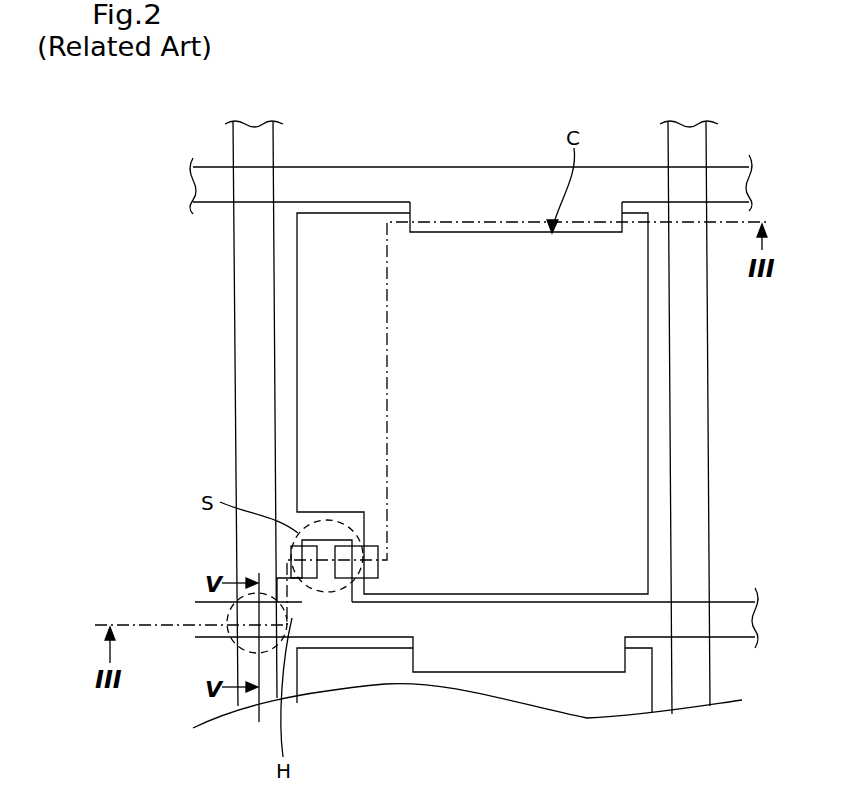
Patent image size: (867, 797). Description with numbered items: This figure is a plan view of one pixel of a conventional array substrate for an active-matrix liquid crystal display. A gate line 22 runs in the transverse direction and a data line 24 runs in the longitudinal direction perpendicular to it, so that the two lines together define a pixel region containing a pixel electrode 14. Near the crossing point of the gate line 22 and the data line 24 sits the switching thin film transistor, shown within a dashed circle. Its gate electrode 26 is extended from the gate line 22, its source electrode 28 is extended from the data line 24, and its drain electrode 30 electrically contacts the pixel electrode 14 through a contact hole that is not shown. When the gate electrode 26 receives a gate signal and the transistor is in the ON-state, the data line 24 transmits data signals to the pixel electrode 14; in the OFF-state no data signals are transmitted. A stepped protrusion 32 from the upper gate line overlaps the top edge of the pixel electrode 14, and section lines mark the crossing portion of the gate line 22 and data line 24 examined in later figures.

The pixel electrode 14 is at (650, 441).
The gate line 22 is at (470, 657).
The data line 24 is at (257, 377).
The gate electrode 26 is at (327, 575).
The source electrode 28 is at (293, 553).
The drain electrode 30 is at (380, 555).
The storage capacitor electrode 32 is at (410, 223).